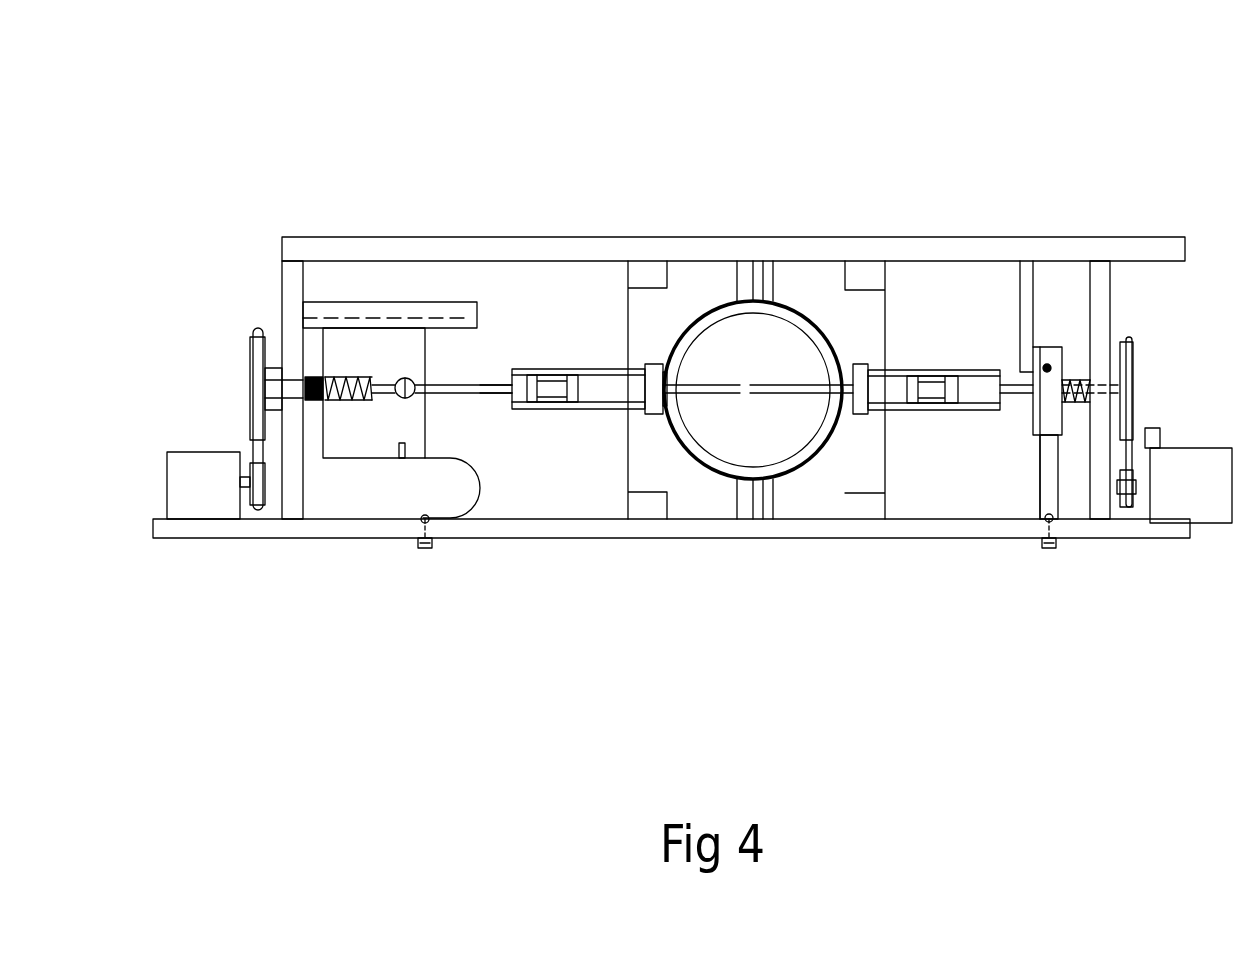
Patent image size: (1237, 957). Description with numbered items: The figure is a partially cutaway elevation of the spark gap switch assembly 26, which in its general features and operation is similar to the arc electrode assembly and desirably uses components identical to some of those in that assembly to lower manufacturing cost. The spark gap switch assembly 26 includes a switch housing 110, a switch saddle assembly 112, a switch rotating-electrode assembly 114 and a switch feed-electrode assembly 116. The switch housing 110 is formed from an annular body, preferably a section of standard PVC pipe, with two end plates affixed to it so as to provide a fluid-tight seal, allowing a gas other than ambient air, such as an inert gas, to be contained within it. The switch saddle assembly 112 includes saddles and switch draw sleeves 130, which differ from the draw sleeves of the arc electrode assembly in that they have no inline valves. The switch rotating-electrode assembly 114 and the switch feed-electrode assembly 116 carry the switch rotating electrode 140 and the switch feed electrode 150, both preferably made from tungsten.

The spark gap switch assembly 26 is at (770, 104).
The switch housing 110 is at (751, 324).
The switch saddle assembly 112 is at (778, 587).
The switch rotating-electrode assembly 114 is at (1081, 586).
The switch feed-electrode assembly 116 is at (376, 577).
The switch draw sleeve 130 is at (610, 412).
The switch rotating electrode 140 is at (1012, 388).
The switch feed electrode 150 is at (495, 390).